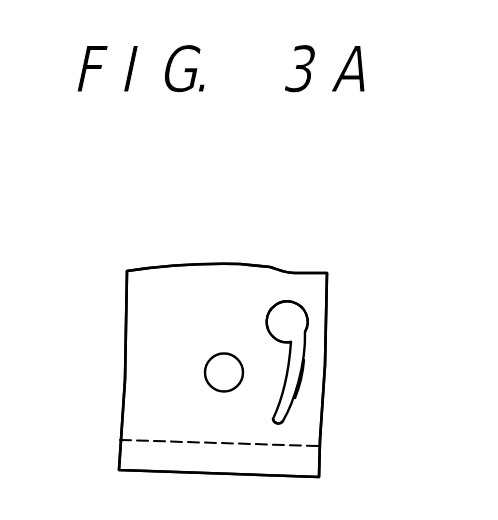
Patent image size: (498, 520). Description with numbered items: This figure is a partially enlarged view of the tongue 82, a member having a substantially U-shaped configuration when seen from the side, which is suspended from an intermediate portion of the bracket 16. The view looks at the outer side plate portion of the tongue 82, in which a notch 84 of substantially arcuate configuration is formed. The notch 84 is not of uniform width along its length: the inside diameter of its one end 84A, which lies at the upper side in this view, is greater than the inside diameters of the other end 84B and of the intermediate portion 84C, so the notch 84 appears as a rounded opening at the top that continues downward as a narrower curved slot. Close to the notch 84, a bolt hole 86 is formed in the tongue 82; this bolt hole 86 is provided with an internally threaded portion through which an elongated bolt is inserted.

The bracket 16 is at (236, 264).
The tongue 82 is at (130, 351).
The notch 84 is at (303, 358).
The one end of the notch 84A is at (291, 313).
The other end of the notch 84B is at (300, 424).
The intermediate portion of the notch 84C is at (305, 382).
The bolt hole 86 is at (224, 355).